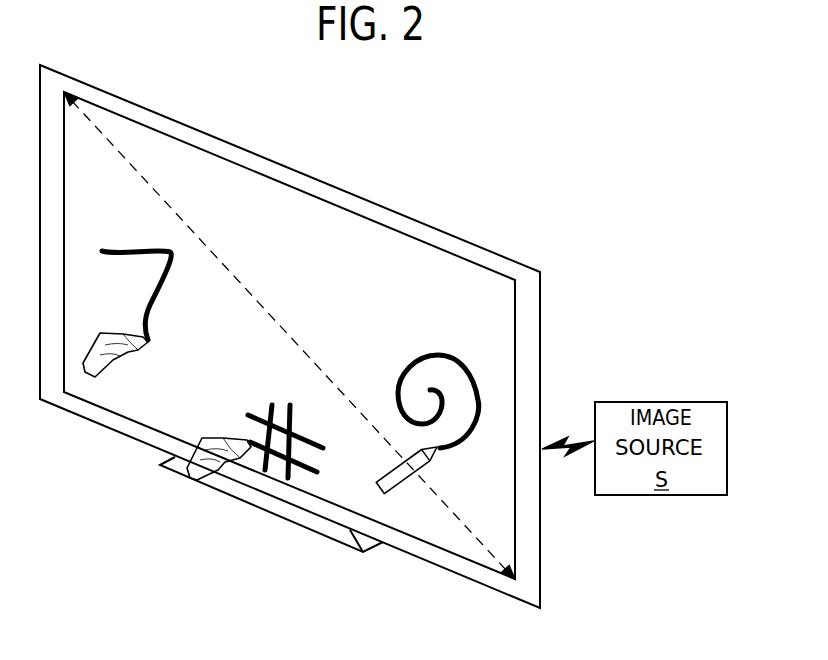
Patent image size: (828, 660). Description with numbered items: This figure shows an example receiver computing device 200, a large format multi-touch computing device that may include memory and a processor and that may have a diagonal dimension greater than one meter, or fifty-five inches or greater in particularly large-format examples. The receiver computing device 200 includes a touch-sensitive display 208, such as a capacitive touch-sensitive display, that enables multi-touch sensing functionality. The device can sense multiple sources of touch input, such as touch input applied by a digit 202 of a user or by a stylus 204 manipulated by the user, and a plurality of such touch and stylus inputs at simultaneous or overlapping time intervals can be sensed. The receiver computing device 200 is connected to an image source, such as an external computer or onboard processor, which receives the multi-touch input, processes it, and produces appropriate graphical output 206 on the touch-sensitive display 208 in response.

The receiver computing device 200 is at (355, 127).
The digit 202 is at (247, 441).
The stylus 204 is at (379, 489).
The graphical output 206 is at (140, 249).
The touch-sensitive display 208 is at (503, 308).